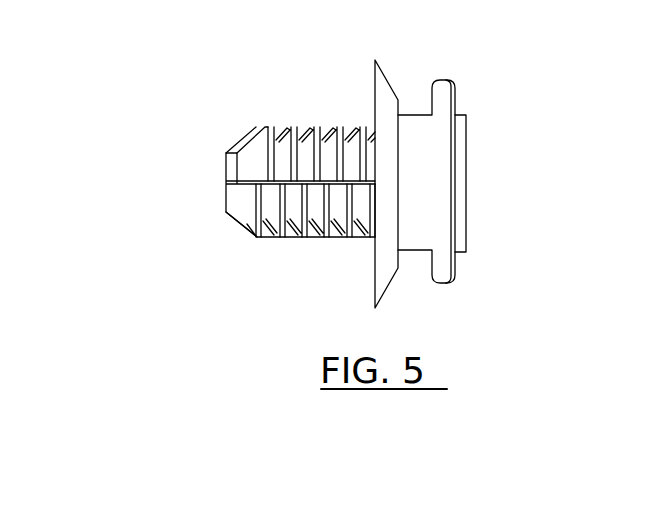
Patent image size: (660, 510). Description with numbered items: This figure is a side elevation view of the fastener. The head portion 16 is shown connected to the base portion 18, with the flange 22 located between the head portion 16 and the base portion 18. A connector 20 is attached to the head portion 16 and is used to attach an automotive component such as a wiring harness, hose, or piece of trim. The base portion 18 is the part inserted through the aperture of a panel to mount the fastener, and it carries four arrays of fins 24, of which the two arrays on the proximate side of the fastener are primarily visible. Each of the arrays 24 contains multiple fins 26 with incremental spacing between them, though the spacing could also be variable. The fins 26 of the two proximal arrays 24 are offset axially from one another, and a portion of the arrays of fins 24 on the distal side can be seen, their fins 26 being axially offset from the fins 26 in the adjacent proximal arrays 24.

The head portion 16 is at (419, 65).
The base portion 18 is at (226, 172).
The connector 20 is at (437, 208).
The flange 22 is at (383, 92).
The arrays of fins 24 is at (229, 132).
The fins 26 is at (287, 210).